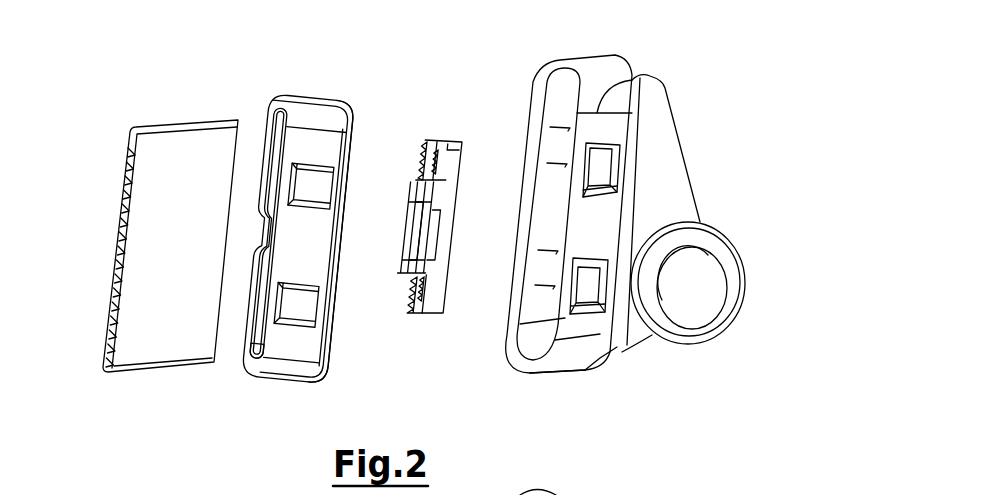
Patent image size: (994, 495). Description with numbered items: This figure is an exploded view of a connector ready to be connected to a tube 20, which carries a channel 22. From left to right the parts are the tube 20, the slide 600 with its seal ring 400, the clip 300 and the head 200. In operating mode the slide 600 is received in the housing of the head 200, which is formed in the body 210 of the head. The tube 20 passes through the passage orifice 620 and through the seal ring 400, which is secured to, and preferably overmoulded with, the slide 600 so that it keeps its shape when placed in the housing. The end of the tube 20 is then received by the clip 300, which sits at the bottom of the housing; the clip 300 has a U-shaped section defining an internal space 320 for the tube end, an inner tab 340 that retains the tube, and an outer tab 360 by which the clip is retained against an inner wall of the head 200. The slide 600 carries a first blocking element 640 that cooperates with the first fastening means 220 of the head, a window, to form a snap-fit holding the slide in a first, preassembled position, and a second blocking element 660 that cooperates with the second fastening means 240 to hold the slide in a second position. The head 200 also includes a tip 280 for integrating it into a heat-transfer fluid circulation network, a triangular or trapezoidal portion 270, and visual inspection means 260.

The tube 20 is at (190, 120).
The channel 22 is at (128, 165).
The head 200 is at (683, 152).
The body 210 is at (662, 90).
The first fastening means 220 is at (612, 58).
The second fastening means 240 is at (550, 298).
The visual inspection means 260 is at (597, 367).
The triangular or trapezoidal portion 270 is at (613, 494).
The tip 280 is at (722, 266).
The clip 300 is at (435, 132).
The internal space 320 is at (437, 307).
The inner tab 340 is at (442, 238).
The outer tab 360 is at (443, 157).
The seal ring 400 is at (333, 350).
The slide 600 is at (302, 95).
The passage orifice 620 is at (258, 378).
The first blocking element 640 is at (268, 163).
The second blocking element 660 is at (317, 173).